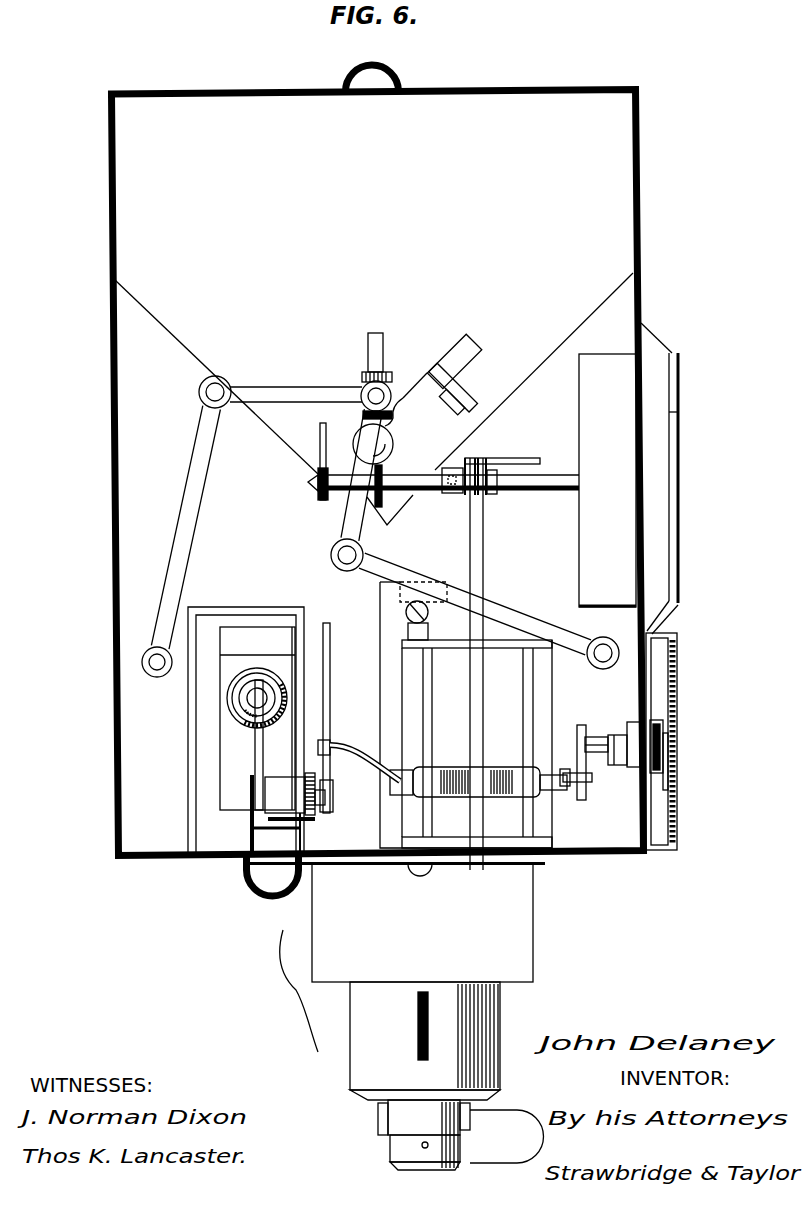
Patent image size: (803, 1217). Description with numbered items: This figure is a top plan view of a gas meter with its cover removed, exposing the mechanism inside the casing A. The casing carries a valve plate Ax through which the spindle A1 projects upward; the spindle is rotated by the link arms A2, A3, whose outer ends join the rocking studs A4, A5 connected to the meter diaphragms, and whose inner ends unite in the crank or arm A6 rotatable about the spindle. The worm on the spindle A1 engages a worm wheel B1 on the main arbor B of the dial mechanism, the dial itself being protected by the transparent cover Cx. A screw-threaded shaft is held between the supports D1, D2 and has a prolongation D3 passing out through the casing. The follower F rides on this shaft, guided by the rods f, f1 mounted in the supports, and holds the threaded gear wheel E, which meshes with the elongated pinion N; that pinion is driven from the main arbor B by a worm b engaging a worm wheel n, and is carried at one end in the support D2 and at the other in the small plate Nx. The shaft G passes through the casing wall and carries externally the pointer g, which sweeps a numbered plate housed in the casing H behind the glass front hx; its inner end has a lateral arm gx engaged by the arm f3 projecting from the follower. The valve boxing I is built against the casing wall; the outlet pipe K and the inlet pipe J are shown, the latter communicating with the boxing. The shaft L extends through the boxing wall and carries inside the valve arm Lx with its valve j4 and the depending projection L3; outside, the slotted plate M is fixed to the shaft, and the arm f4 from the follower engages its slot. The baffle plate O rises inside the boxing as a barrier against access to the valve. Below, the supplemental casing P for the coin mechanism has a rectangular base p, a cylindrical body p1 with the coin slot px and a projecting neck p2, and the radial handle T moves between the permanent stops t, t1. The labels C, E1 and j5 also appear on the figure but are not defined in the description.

The casing A is at (641, 214).
The valve plate Ax is at (374, 334).
The outlet pipe K is at (393, 78).
The box C is at (607, 480).
The transparent cover Cx is at (664, 396).
The casing H is at (673, 627).
The glass front hx is at (677, 657).
The pointer g is at (668, 765).
The shaft G is at (604, 758).
The lateral projecting arm gx is at (574, 757).
The arm f3 is at (578, 786).
The rocking stud A5 is at (603, 669).
The link arm A3 is at (503, 617).
The crank or arm A6 is at (383, 358).
The spindle A1 is at (394, 446).
The worm wheel B1 is at (383, 502).
The main arbor B is at (551, 483).
The small plate Nx is at (518, 458).
The elongated pinion N is at (484, 552).
The worm wheel n is at (452, 494).
The worm b is at (492, 495).
The support plate D1 is at (477, 637).
The support plate D2 is at (453, 837).
The prolongation D3 is at (477, 855).
The rod f1 is at (423, 720).
The rod f is at (525, 722).
The gear wheel E is at (466, 769).
The roller E1 is at (510, 769).
The follower F is at (523, 787).
The link arm A2 is at (193, 511).
The rocking stud A4 is at (158, 677).
The valve boxing I is at (262, 607).
The valve j4 is at (269, 687).
The hub j5 is at (250, 698).
The depending projection L3 is at (247, 716).
The valve arm Lx is at (261, 750).
The shaft L is at (320, 797).
The baffle plate O is at (280, 835).
The inlet pipe J is at (247, 889).
The slotted plate M is at (330, 670).
The arm f4 is at (356, 757).
The supplemental casing P is at (287, 991).
The base portion p is at (394, 922).
The body portion p1 is at (497, 1027).
The coin slot px is at (417, 1028).
The projecting neck p2 is at (424, 1135).
The permanent stop t is at (387, 1115).
The permanent stop t1 is at (487, 1107).
The radial handle T is at (507, 1136).